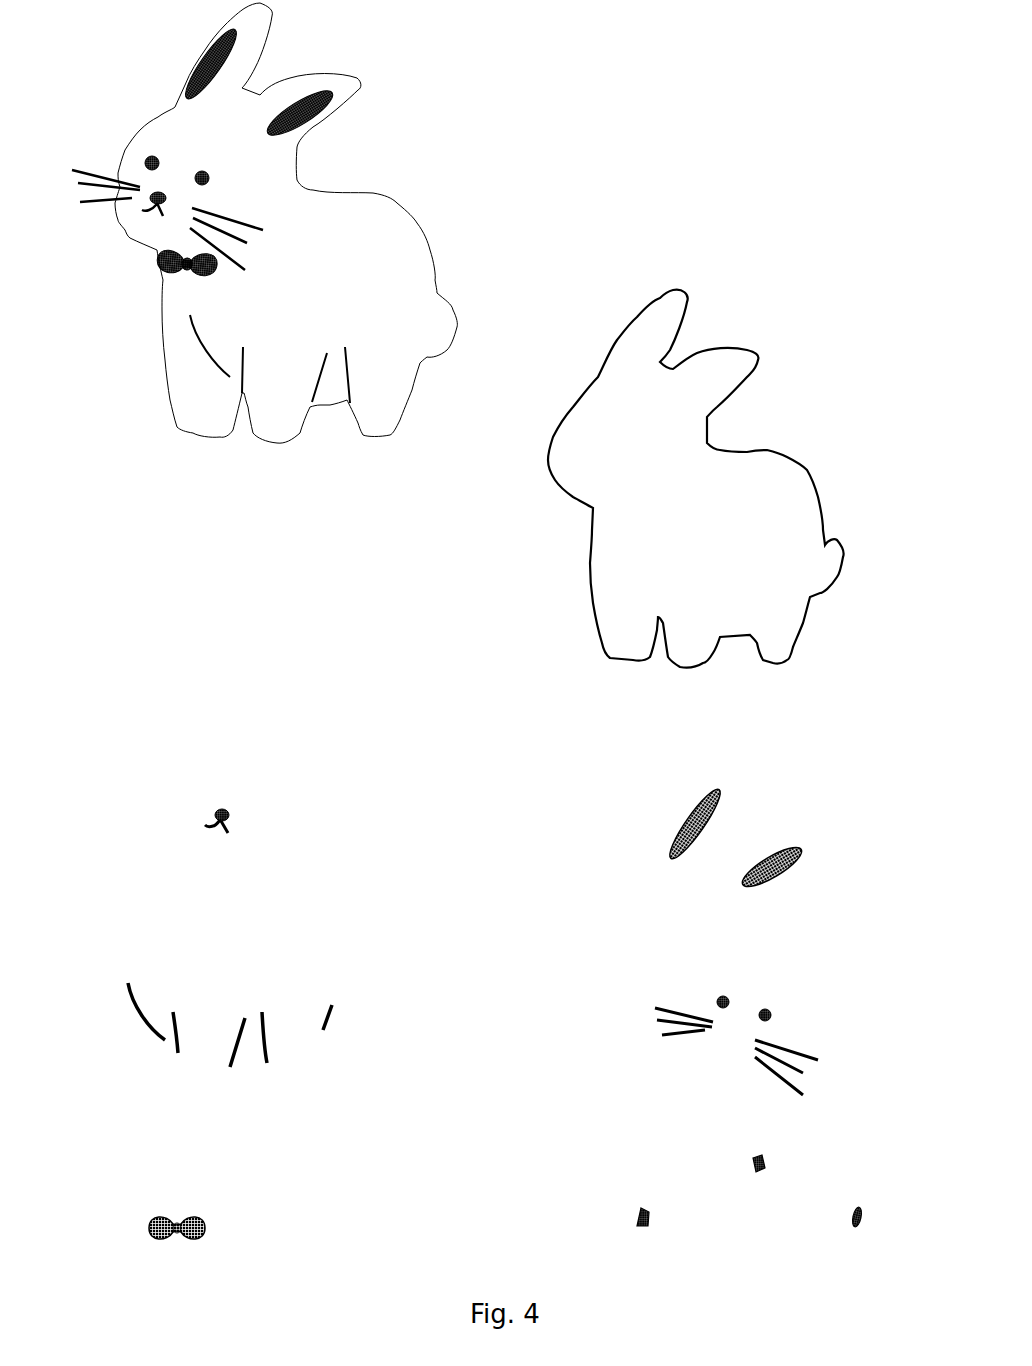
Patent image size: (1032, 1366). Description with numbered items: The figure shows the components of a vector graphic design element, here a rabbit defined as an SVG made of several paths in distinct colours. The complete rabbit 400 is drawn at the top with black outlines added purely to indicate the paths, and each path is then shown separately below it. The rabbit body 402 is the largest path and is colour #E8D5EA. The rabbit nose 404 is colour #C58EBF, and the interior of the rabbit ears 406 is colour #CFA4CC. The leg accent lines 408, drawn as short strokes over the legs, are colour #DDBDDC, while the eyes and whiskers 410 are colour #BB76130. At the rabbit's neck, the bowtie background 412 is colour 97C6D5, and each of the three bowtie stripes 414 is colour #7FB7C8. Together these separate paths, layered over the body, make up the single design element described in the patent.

The decorated rabbit image 400 is at (144, 46).
The rabbit body 402 is at (499, 545).
The rabbit nose 404 is at (167, 827).
The interior of the rabbit ears 406 is at (645, 822).
The leg accent lines 408 is at (97, 1024).
The eyes and whiskers 410 is at (599, 1032).
The bowtie background 412 is at (105, 1236).
The bowtie stripes 414 is at (549, 1236).